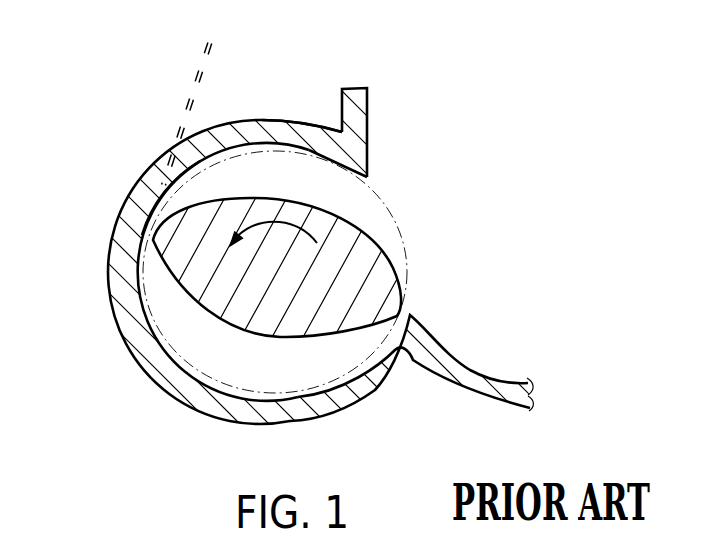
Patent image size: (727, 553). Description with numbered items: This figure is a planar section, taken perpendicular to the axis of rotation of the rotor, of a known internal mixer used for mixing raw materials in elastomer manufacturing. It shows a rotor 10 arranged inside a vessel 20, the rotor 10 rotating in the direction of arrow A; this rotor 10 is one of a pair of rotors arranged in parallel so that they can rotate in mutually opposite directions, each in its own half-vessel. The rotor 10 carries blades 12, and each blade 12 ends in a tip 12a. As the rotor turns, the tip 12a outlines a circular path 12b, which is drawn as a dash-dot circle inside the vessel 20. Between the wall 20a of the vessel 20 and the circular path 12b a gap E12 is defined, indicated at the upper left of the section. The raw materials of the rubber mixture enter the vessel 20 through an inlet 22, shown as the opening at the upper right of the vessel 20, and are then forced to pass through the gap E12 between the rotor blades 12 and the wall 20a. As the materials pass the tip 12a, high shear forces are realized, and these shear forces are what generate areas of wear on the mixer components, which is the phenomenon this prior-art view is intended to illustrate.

The rotor 10 is at (355, 263).
The blade 12 is at (175, 281).
The tip 12a is at (150, 220).
The circular path 12b is at (396, 220).
The vessel 20 is at (267, 132).
The wall 20a is at (309, 150).
The inlet 22 is at (368, 89).
The arrow A is at (322, 205).
The gap E12 is at (245, 60).